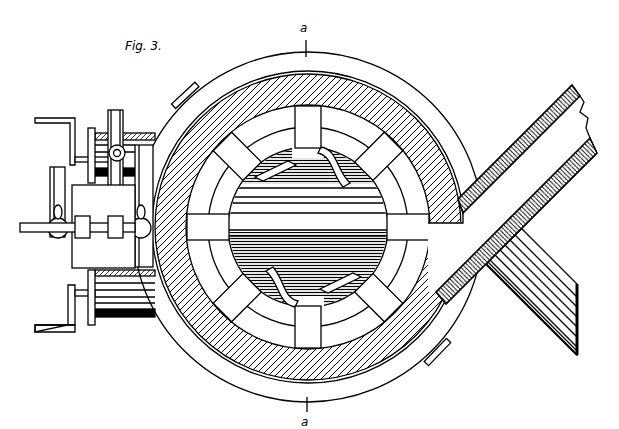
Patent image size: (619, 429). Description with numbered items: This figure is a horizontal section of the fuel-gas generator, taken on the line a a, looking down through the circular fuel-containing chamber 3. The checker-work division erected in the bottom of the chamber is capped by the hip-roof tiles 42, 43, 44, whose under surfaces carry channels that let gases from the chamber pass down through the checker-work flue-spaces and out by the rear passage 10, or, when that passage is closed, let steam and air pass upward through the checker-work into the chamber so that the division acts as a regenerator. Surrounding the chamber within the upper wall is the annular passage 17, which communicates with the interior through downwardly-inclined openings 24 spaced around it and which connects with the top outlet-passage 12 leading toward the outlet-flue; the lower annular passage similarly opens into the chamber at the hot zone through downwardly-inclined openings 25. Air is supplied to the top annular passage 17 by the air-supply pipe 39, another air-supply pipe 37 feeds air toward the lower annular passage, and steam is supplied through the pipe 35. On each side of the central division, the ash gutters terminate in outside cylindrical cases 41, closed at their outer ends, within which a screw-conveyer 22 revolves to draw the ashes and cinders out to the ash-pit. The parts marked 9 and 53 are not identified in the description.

The fuel-containing chamber 3 is at (226, 252).
The shaft 9 is at (100, 233).
The bottom outlet-passage 10 is at (531, 292).
The top outlet-passage 12 is at (516, 194).
The annular passage 17 is at (308, 227).
The screw-conveyer 22 is at (308, 227).
The downwardly-inclined openings 24 is at (308, 227).
The downwardly-inclined openings 25 is at (313, 226).
The steam-supply pipe 35 is at (48, 202).
The air-supply pipe 37 is at (106, 208).
The air-supply pipe 39 is at (142, 206).
The cylindrical case 41 is at (125, 218).
The tile 42 is at (308, 227).
The tile 43 is at (308, 212).
The tile 44 is at (308, 212).
The bracket 53 is at (72, 216).